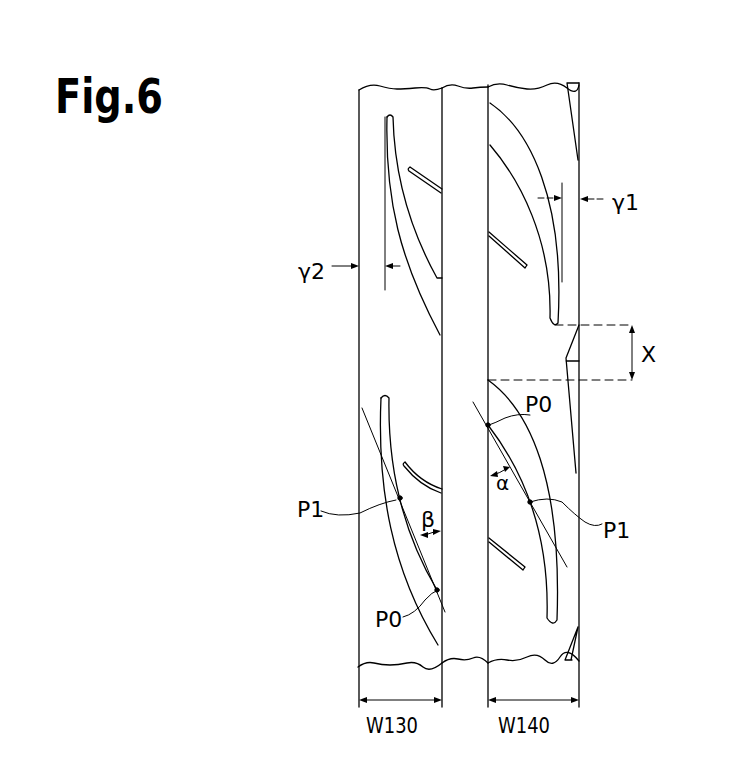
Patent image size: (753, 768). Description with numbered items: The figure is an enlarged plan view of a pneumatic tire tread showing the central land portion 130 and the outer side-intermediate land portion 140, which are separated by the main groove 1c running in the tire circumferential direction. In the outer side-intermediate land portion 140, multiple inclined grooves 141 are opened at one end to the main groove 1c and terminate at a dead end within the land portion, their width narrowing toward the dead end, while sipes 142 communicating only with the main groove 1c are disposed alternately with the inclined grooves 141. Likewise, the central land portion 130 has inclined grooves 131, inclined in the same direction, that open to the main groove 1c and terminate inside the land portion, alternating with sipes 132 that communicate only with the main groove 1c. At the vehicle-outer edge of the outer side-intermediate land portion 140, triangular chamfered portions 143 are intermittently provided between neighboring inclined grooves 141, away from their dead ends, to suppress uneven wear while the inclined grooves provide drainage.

The central land portion 130 is at (423, 80).
The outer side-intermediate land portion 140 is at (547, 78).
The main groove 1c is at (470, 100).
The inclined groove 131 is at (435, 280).
The sipe 132 is at (410, 165).
The inclined groove 141 is at (530, 163).
The sipe 142 is at (550, 258).
The chamfered portion 143 is at (580, 92).